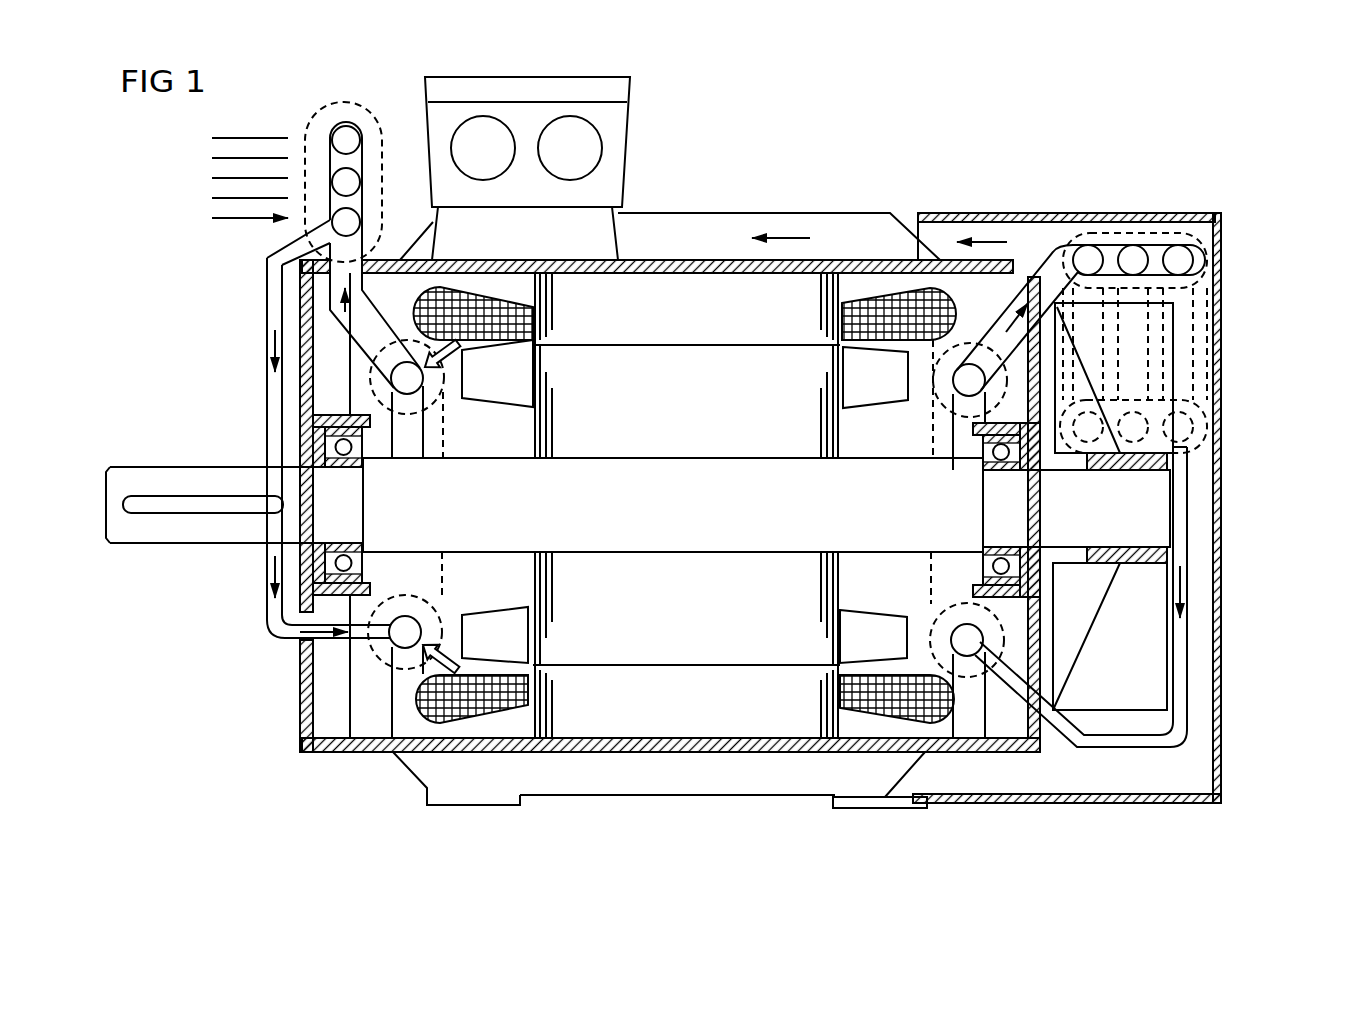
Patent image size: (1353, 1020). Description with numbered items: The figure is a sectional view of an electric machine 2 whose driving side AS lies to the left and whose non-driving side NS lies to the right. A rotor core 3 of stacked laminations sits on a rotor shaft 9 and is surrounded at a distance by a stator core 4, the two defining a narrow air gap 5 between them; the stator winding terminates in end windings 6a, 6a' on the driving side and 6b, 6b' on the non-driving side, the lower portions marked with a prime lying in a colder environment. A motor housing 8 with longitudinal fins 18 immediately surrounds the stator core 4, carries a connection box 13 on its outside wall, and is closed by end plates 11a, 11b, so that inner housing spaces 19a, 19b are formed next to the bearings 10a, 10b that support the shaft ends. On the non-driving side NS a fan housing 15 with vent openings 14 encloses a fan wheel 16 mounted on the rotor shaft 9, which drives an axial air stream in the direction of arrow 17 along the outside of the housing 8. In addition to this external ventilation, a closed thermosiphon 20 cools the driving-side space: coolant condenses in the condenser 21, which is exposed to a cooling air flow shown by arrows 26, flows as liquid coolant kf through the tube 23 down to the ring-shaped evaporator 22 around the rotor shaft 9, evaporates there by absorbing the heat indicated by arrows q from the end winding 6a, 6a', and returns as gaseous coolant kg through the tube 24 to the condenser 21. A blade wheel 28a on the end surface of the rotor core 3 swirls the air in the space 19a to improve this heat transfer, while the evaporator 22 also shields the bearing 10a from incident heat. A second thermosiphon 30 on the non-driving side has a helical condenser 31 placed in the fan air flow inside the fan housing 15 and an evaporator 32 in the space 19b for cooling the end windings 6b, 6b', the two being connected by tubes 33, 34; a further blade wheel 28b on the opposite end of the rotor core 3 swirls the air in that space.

The electric machine 2 is at (906, 124).
The rotor core 3 is at (730, 460).
The stator core 4 is at (769, 234).
The air gap 5 is at (632, 346).
The end winding 6a is at (474, 278).
The end winding 6a' is at (472, 736).
The end winding 6b is at (899, 278).
The end winding 6b' is at (897, 736).
The motor housing 8 is at (702, 277).
The rotor shaft 9 is at (668, 553).
The bearing 10a is at (345, 468).
The bearing 10b is at (1002, 548).
The end plate 11a is at (300, 300).
The end plate 11b is at (1036, 618).
The terminal box 13 is at (618, 148).
The vent openings 14 is at (1220, 407).
The fan housing 15 is at (1083, 213).
The fan wheel 16 is at (1084, 652).
The arrow 17 is at (812, 216).
The longitudinal fins 18 is at (840, 222).
The inner housing space 19a is at (365, 725).
The inner housing space 19b is at (1000, 730).
The thermosiphon 20 is at (366, 368).
The condenser 21 is at (352, 164).
The evaporator 22 is at (412, 588).
The tube 23 is at (270, 395).
The tube 24 is at (393, 262).
The arrows 26 is at (206, 192).
The blade wheel 28a is at (508, 392).
The blade wheel 28b is at (868, 626).
The thermosiphon 30 is at (946, 368).
The helical condenser 31 is at (1153, 253).
The evaporator 32 is at (958, 405).
The return channel 33 is at (1192, 500).
The connecting pipe 34 is at (1040, 277).
The gaseous coolant kg is at (366, 307).
The liquid coolant kf is at (268, 574).
The arrows q is at (456, 506).
The driving side AS is at (184, 422).
The non-driving side NS is at (1258, 478).